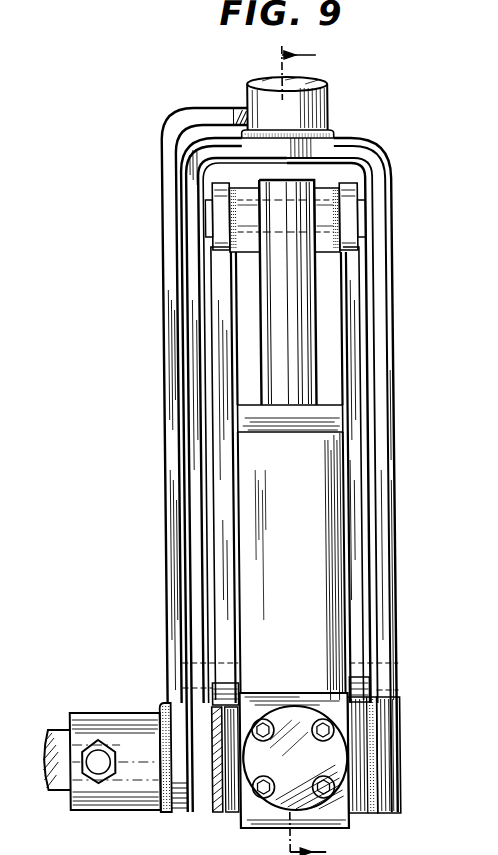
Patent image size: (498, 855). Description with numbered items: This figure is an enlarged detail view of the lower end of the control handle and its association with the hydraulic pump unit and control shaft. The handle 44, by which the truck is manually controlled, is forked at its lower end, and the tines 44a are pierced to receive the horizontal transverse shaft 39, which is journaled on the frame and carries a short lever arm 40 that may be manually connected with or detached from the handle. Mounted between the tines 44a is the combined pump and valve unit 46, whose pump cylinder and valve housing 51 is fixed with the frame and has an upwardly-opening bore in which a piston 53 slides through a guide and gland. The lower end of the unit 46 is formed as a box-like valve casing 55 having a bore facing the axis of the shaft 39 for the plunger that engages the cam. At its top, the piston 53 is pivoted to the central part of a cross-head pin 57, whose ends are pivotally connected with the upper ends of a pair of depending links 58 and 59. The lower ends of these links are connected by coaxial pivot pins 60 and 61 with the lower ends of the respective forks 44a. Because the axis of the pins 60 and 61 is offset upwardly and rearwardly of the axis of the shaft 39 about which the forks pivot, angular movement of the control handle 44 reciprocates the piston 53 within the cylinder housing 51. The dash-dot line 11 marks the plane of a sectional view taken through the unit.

The section line 11- 11 is at (287, 448).
The shaft 39 is at (51, 736).
The lever arm 40 is at (174, 307).
The handle 44 is at (331, 111).
The fork tines 44a is at (193, 431).
The pump and valve unit 46 is at (346, 575).
The pump cylinder and valve housing 51 is at (245, 554).
The piston 53 is at (275, 328).
The valve casing 55 is at (291, 712).
The cross-head pin 57 is at (376, 217).
The depending link 58 is at (218, 495).
The depending link 59 is at (358, 491).
The pivot pin 60 is at (206, 663).
The pivot pin 61 is at (371, 667).